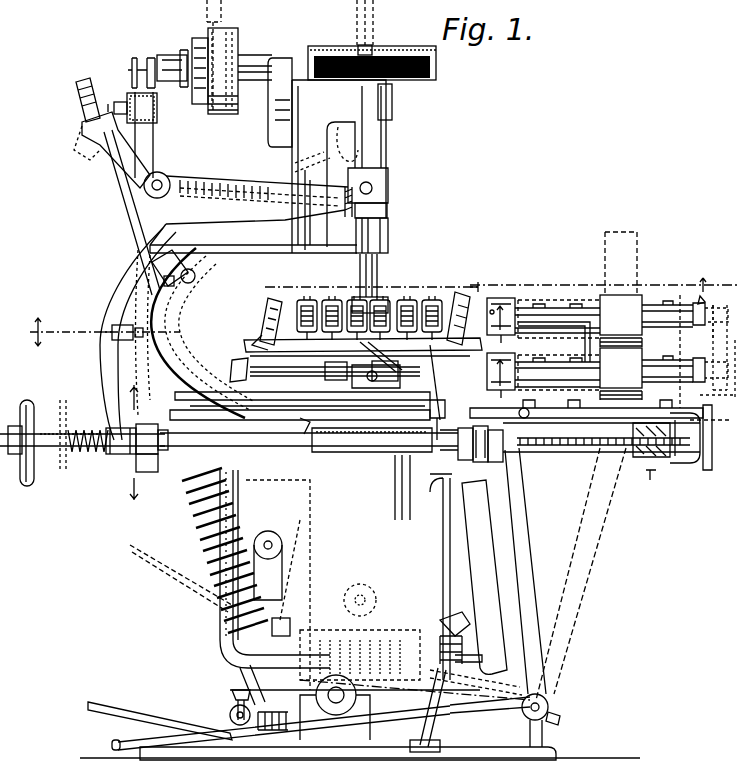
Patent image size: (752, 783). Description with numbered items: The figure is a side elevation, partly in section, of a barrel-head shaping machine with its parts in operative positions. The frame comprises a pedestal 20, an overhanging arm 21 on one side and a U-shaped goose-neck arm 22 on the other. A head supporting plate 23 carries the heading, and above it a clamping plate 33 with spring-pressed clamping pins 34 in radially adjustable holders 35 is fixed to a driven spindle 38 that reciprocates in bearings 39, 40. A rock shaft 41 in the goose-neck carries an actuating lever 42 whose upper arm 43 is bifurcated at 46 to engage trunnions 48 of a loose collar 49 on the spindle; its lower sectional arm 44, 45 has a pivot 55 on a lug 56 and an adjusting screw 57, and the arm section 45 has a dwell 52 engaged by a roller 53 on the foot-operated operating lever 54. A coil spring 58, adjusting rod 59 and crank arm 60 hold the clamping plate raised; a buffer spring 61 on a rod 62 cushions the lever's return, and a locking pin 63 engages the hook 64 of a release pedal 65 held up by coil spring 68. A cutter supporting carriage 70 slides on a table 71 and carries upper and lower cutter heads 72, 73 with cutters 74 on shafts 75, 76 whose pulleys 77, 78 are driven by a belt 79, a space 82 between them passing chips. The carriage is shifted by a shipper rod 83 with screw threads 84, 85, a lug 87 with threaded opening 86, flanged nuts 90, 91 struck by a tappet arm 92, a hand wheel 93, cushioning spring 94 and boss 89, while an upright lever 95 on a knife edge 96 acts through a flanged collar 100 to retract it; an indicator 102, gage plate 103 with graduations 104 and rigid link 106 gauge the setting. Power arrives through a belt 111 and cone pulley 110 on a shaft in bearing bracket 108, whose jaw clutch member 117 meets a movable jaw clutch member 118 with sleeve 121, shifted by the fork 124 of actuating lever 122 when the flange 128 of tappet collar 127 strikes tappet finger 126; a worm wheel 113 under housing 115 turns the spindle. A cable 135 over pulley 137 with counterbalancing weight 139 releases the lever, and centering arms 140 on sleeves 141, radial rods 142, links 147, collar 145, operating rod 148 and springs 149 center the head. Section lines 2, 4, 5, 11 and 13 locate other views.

The belt 111 is at (234, 55).
The jaw clutch member 117 is at (196, 40).
The cone pulley 110 is at (222, 114).
The bearing bracket 108 is at (262, 57).
The sleeve 121 is at (170, 56).
The fork 124 is at (128, 70).
The movable jaw clutch member 118 is at (184, 88).
The housing 115 is at (375, 50).
The worm wheel 113 is at (437, 64).
The bearing 40 is at (392, 100).
The actuating lever 122 is at (153, 140).
The crank arm 60 is at (100, 158).
The adjusting rod 59 is at (118, 216).
The rock shaft 41 is at (166, 180).
The upper arm 43 is at (259, 200).
The actuating lever 42 is at (220, 254).
The lug 56 is at (152, 270).
The pivot 55 is at (196, 278).
The arm section 44 is at (118, 297).
The goose-neck arm 22 is at (179, 333).
The adjusting screw 57 is at (112, 338).
The collar 49 is at (380, 180).
The trunnions 48 is at (374, 188).
The bifurcated end 46 is at (388, 206).
The bearing 39 is at (388, 234).
The driven spindle 38 is at (380, 266).
The section line 13- 13 is at (478, 282).
The clamping plate 33 is at (460, 292).
The holder 35 is at (330, 300).
The clamping pins 34 is at (262, 334).
The centering arms 140 is at (248, 345).
The supporting sleeves 141 is at (231, 368).
The radial rods 142 is at (335, 364).
The springs 149 is at (395, 386).
The head supporting plate 23 is at (445, 382).
The links 147 is at (240, 388).
The operating rod 148 is at (240, 420).
The section line 11- 11 is at (435, 436).
The overhanging arm 21 is at (430, 444).
The graduations 104 is at (356, 440).
The gage plate 103 is at (372, 452).
The indicator 102 is at (312, 436).
The shipper rod 83 is at (275, 446).
The collar 145 is at (399, 487).
The rigid link 106 is at (541, 413).
The flanged collar 100 is at (466, 462).
The flanged nut 91 is at (488, 462).
The flanged nut 90 is at (503, 460).
The screw threads 84 is at (580, 452).
The lug 87 is at (645, 458).
The section line 4- 4 is at (648, 487).
The threaded opening 86 is at (672, 458).
The table 71 is at (712, 412).
The cutter supporting carriage 70 is at (586, 358).
The cutters 74 is at (500, 297).
The upper cutter head 72 is at (515, 298).
The lower cutter head 73 is at (490, 388).
The space 82 is at (537, 341).
The pulley 77 is at (621, 321).
The pulley 78 is at (621, 374).
The belt 79 is at (638, 262).
The section line 2- 2 is at (603, 285).
The shaft 75 is at (705, 313).
The shaft 76 is at (708, 372).
The hand wheel 93 is at (26, 486).
The screw threads 85 is at (56, 452).
The cushioning spring 94 is at (92, 452).
The boss 89 is at (122, 454).
The tappet finger 126 is at (140, 424).
The tappet collar 127 is at (148, 472).
The section line 5- 5 is at (133, 443).
The flange 128 is at (166, 470).
The arm section 45 is at (240, 520).
The pedestal 20 is at (355, 582).
The pulley 137 is at (282, 538).
The cable 135 is at (300, 568).
The coil spring 58 is at (200, 558).
The counterbalancing weight 139 is at (270, 628).
The dwell 52 is at (240, 670).
The hook 64 is at (230, 696).
The locking pin 63 is at (240, 725).
The coil spring 68 is at (272, 732).
The release pedal 65 is at (112, 705).
The operating lever 54 is at (275, 730).
The roller 53 is at (357, 688).
The rod 62 is at (426, 710).
The knife edge 96 is at (448, 620).
The buffer spring 61 is at (470, 668).
The upright lever 95 is at (466, 565).
The tappet arm 92 is at (526, 560).